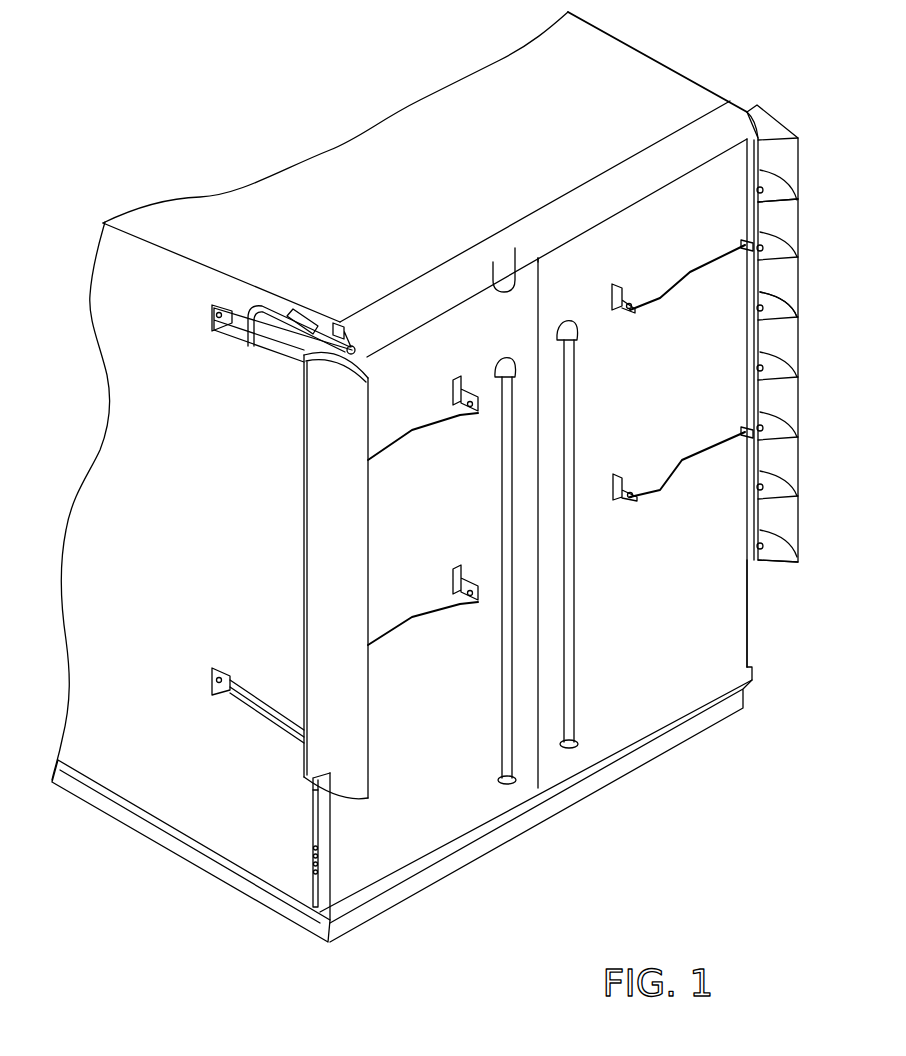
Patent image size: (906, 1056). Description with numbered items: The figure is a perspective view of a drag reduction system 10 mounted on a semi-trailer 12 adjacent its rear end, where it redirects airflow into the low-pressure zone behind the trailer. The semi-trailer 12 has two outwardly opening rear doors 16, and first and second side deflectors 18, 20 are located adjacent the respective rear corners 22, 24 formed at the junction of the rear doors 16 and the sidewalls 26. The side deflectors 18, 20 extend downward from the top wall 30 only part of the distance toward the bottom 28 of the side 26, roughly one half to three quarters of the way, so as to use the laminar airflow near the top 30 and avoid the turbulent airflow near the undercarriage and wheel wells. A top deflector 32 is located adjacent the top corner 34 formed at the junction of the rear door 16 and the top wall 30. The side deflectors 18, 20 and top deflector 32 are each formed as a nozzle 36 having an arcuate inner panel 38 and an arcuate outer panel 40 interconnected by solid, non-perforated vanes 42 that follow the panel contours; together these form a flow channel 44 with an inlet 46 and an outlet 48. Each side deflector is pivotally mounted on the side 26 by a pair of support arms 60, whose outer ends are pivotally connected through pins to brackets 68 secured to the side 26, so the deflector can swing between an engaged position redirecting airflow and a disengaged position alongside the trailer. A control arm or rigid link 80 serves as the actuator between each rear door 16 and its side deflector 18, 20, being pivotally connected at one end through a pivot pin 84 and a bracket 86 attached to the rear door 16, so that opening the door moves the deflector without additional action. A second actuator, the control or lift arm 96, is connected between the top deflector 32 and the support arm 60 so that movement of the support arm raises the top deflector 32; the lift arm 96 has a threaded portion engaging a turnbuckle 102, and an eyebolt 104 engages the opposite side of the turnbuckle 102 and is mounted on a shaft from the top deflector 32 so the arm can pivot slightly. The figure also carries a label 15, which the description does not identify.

The drag reduction system 10 is at (612, 60).
The semi-trailer 12 is at (357, 155).
The door frame 15 is at (746, 328).
The rear doors 16 is at (640, 705).
The first side deflector 18 is at (808, 400).
The second side deflector 20 is at (342, 783).
The rear corner 22 is at (748, 610).
The rear corner 24 is at (312, 883).
The side or sidewall 26 is at (691, 78).
The base or bottom 28 is at (173, 843).
The top or top wall 30 is at (193, 242).
The top deflector 32 is at (423, 298).
The top corner 34 is at (775, 118).
The nozzle 36 is at (800, 520).
The nozzle spine or inner panel 38 is at (370, 700).
The outer panel 40 is at (800, 348).
The vanes 42 is at (775, 313).
The passageway or flow channel 44 is at (776, 230).
The inlet 46 is at (466, 250).
The outlet 48 is at (497, 290).
The support arms 60 is at (240, 340).
The bracket 68 is at (227, 300).
The control arm or rigid link 80 is at (670, 483).
The pivot pin 84 is at (620, 500).
The bracket 86 is at (613, 478).
The control or lift arm or rigid link 96 is at (270, 300).
The turnbuckle 102 is at (300, 300).
The eyebolt 104 is at (343, 333).